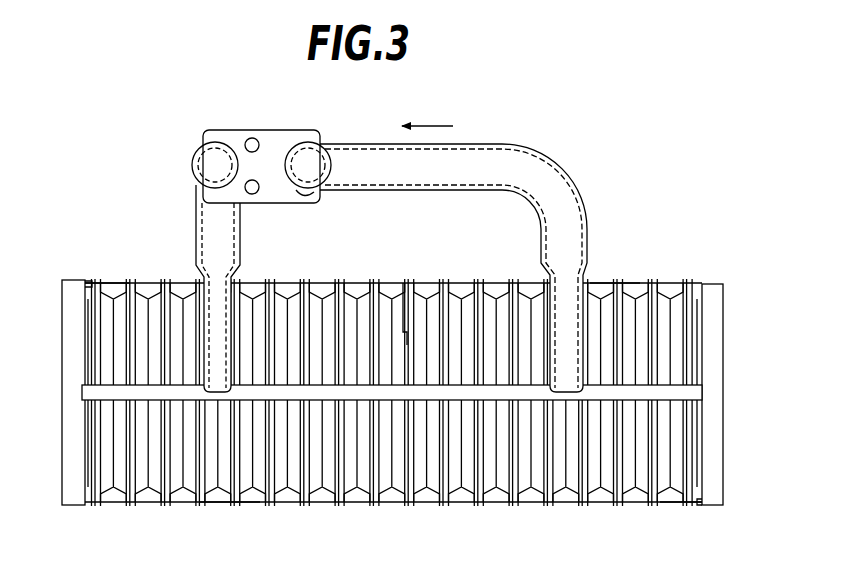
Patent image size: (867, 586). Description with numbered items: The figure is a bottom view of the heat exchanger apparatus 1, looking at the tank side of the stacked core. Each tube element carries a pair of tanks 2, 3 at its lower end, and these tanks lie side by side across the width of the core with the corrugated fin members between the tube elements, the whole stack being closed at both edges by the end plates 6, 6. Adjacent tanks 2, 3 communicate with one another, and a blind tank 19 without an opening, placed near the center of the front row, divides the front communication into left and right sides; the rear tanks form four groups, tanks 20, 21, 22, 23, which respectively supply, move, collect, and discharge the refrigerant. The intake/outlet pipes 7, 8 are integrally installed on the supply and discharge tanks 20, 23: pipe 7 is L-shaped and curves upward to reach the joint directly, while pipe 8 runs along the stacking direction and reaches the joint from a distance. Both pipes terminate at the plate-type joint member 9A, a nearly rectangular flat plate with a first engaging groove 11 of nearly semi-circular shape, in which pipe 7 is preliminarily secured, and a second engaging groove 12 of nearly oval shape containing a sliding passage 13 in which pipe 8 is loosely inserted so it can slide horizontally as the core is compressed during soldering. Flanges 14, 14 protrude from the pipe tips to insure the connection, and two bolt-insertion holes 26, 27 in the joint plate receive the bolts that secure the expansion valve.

The heat exchanger apparatus 1 is at (712, 263).
The tank 2 is at (155, 303).
The tank 3 is at (181, 498).
The end plate 6 is at (75, 333).
The intake/outlet pipe 7 is at (205, 222).
The intake/outlet pipe 8 is at (484, 157).
The plate-type joint member 9A is at (277, 140).
The first engaging groove 11 is at (226, 138).
The second engaging groove 12 is at (302, 142).
The sliding passage 13 is at (302, 196).
The flange 14 is at (197, 152).
The blind tank 19 is at (425, 289).
The tank 20 is at (100, 267).
The tank 21 is at (238, 512).
The tank 22 is at (677, 515).
The tank 23 is at (605, 270).
The bolt-insertion hole 26 is at (253, 195).
The bolt-insertion hole 27 is at (253, 138).